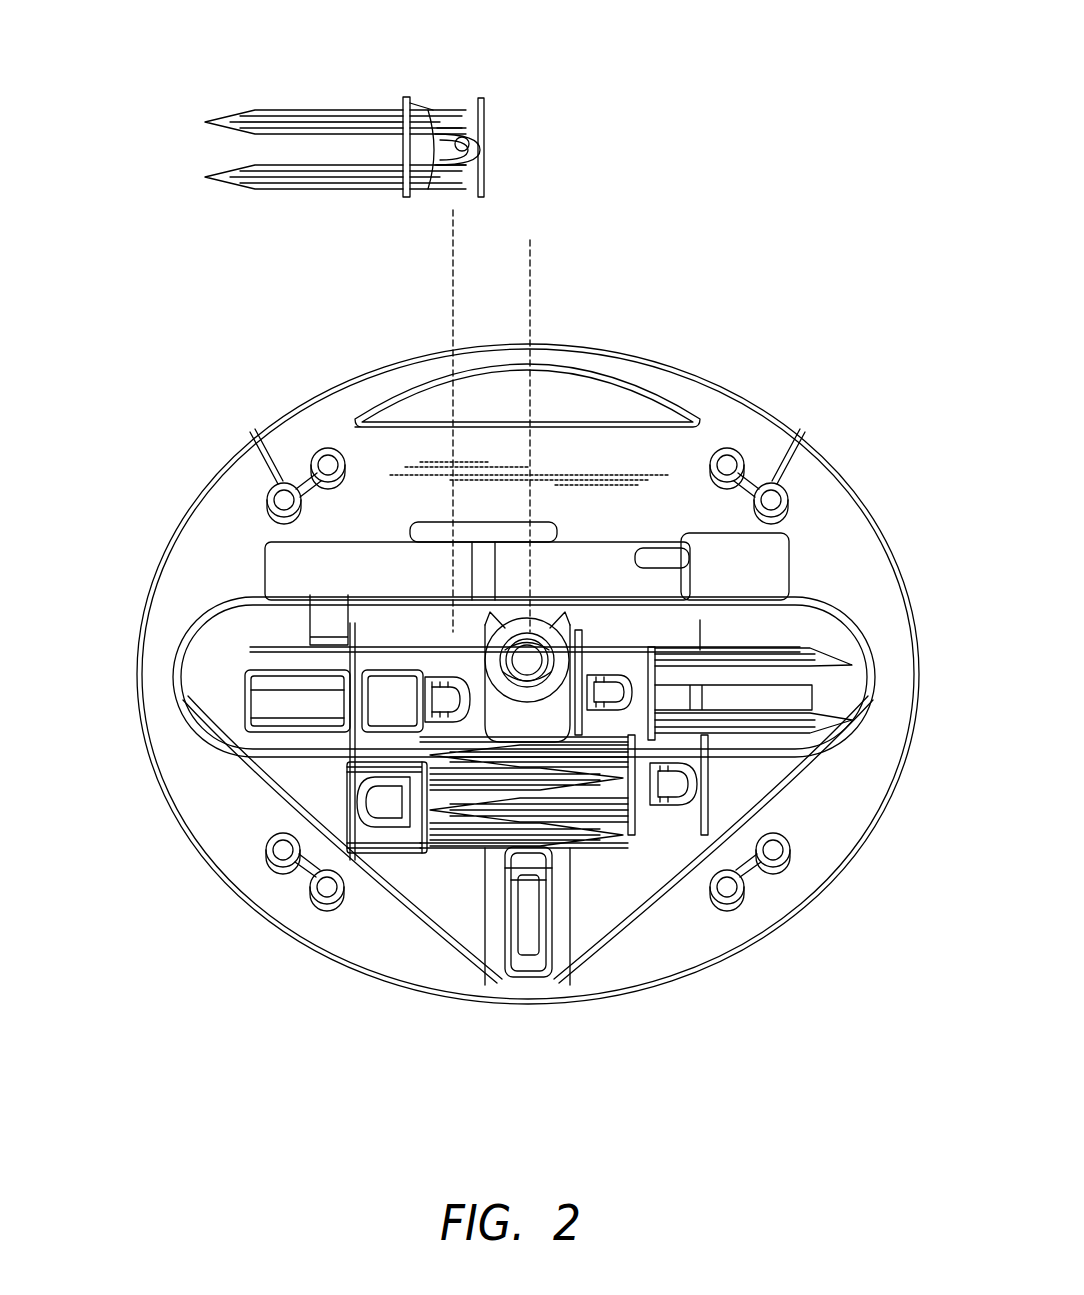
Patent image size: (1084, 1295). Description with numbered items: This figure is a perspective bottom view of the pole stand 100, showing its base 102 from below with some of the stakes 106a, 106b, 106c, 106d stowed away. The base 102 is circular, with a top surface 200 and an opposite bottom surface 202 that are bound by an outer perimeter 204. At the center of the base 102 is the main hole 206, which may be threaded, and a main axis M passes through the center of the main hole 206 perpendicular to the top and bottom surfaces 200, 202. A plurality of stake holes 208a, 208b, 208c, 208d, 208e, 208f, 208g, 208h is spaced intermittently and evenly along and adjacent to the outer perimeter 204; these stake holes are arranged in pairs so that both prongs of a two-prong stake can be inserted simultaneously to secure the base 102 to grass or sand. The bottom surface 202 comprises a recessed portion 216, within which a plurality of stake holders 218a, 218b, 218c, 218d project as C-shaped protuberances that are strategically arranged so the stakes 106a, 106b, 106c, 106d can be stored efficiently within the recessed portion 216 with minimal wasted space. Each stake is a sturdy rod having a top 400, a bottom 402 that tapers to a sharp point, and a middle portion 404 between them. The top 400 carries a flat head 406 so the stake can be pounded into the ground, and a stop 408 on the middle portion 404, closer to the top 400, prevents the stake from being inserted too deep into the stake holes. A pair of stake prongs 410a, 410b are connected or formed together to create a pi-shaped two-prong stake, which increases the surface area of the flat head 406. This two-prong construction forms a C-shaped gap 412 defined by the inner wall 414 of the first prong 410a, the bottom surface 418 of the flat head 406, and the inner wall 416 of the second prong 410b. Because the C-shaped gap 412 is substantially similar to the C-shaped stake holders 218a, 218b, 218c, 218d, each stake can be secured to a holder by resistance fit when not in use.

The pole stand 100 is at (778, 208).
The base 102 is at (480, 1003).
The stake 106a is at (327, 110).
The stake 106b is at (377, 847).
The stake 106c is at (677, 830).
The stake 106d is at (673, 655).
The top surface 200 is at (137, 672).
The bottom surface 202 is at (165, 750).
The outer perimeter 204 is at (142, 720).
The main hole 206 is at (519, 652).
The stake hole 208a is at (283, 497).
The stake hole 208b is at (328, 462).
The stake hole 208c is at (727, 462).
The stake hole 208d is at (771, 483).
The stake hole 208e is at (790, 850).
The stake hole 208f is at (745, 887).
The stake hole 208g is at (312, 887).
The stake hole 208h is at (268, 850).
The recessed portion 216 is at (600, 918).
The stake holder 218a is at (463, 675).
The stake holder 218b is at (375, 790).
The stake holder 218c is at (712, 765).
The stake holder 218d is at (585, 655).
The top 400 is at (475, 222).
The bottom 402 is at (318, 150).
The middle portion 404 is at (291, 203).
The flat head 406 is at (480, 100).
The stop 408 is at (404, 97).
The first stake prong 410a is at (225, 174).
The second stake prong 410b is at (225, 119).
The C-shaped gap 412 is at (440, 158).
The inner wall of the first prong 414 is at (446, 170).
The inner wall of the second prong 416 is at (423, 138).
The bottom surface of the head 418 is at (469, 131).
The main axis M is at (533, 258).